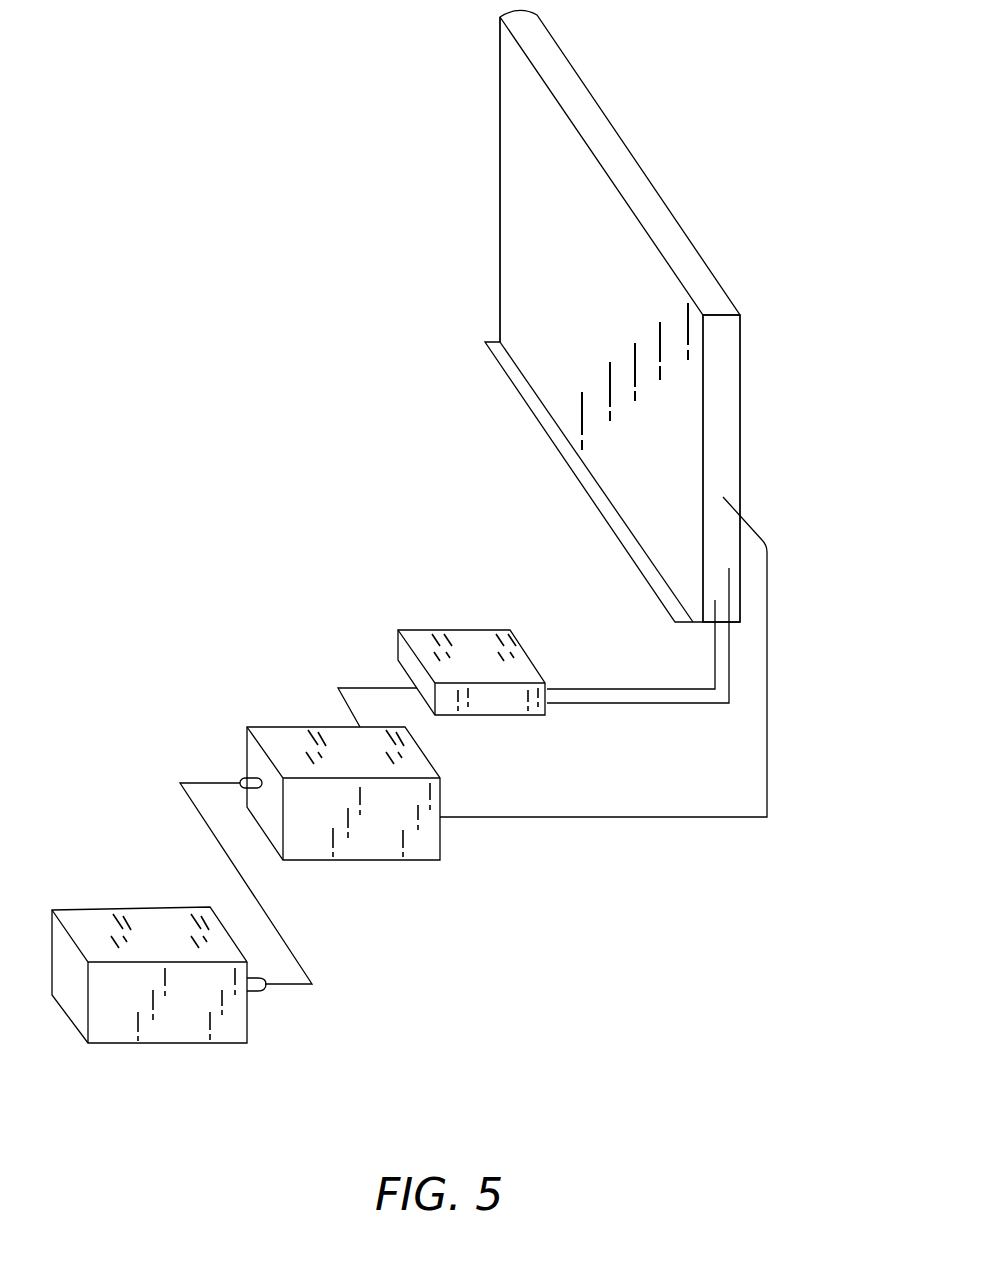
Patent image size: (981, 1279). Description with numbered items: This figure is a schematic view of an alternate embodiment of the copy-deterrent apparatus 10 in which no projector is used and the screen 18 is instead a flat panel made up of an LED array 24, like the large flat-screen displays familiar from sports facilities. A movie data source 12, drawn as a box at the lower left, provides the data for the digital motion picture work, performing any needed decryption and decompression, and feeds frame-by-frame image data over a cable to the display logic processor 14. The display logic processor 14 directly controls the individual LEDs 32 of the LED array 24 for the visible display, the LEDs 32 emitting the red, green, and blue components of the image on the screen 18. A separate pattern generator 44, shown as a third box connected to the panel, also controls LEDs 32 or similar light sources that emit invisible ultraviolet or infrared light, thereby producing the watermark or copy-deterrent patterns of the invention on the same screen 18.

The copy-deterrent apparatus 10 is at (320, 86).
The movie data source 12 is at (170, 1043).
The display logic processor 14 is at (363, 860).
The screen 18 is at (638, 165).
The LED array 24 is at (732, 360).
The LEDs 32 is at (517, 178).
The pattern generator 44 is at (540, 650).